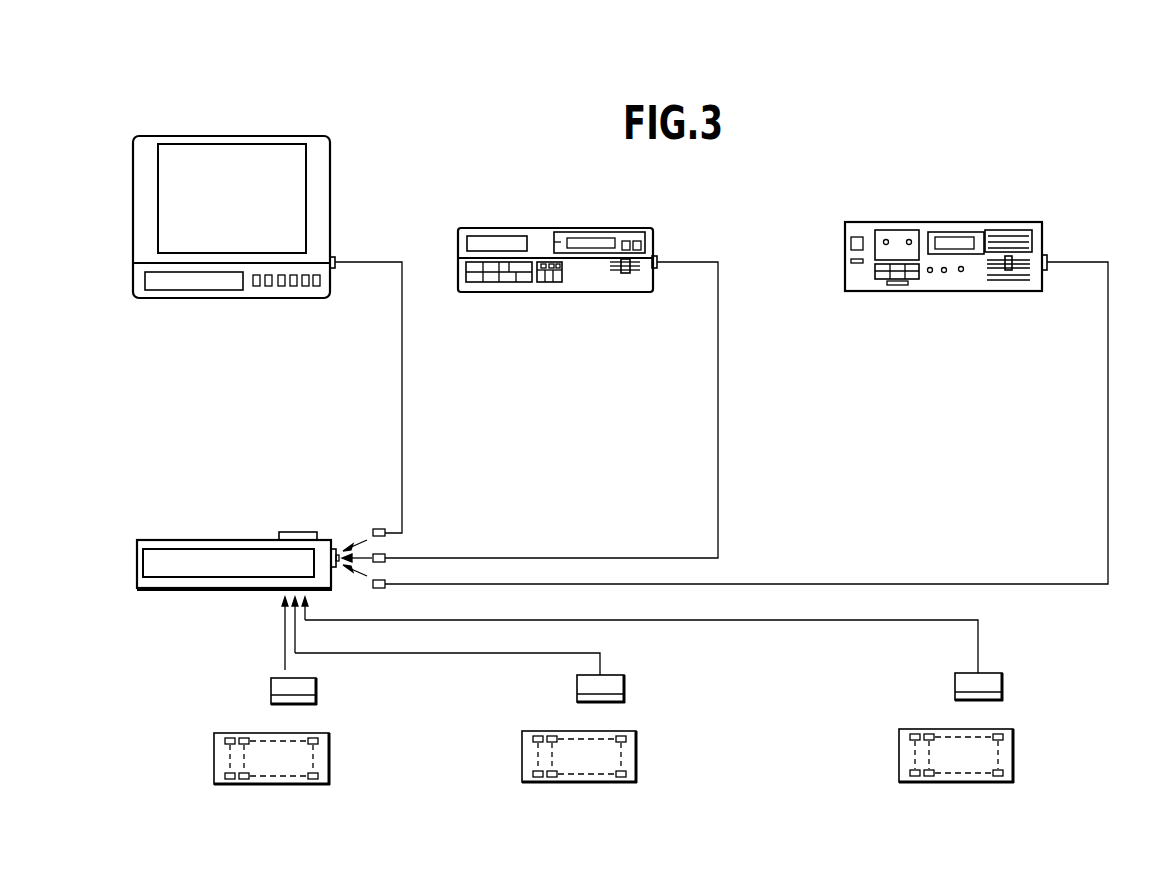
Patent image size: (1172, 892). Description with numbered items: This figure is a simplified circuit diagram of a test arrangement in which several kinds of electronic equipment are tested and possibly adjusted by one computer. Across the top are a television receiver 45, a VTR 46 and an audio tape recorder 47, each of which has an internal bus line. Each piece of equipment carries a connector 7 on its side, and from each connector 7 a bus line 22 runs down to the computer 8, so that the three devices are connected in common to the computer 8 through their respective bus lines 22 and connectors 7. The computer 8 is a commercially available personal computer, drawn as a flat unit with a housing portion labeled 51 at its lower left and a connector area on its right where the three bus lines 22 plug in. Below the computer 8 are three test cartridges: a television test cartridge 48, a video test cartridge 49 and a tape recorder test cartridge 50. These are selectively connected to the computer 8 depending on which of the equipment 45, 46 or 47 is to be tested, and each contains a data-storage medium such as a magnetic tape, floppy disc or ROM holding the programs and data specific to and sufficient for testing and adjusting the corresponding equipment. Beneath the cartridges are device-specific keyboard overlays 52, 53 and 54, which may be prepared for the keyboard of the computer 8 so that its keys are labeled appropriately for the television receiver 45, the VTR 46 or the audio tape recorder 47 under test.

The television receiver 45 is at (333, 160).
The VTR 46 is at (558, 228).
The audio tape recorder 47 is at (951, 222).
The connector 7 is at (333, 257).
The bus line 22 is at (402, 393).
The computer 8 is at (213, 540).
The housing 51 is at (137, 572).
The television test cartridge 48 is at (318, 690).
The video test cartridge 49 is at (626, 690).
The tape recorder test cartridge 50 is at (1004, 688).
The keyboard overlay 52 is at (330, 755).
The keyboard overlay 53 is at (637, 752).
The keyboard overlay 54 is at (1014, 748).